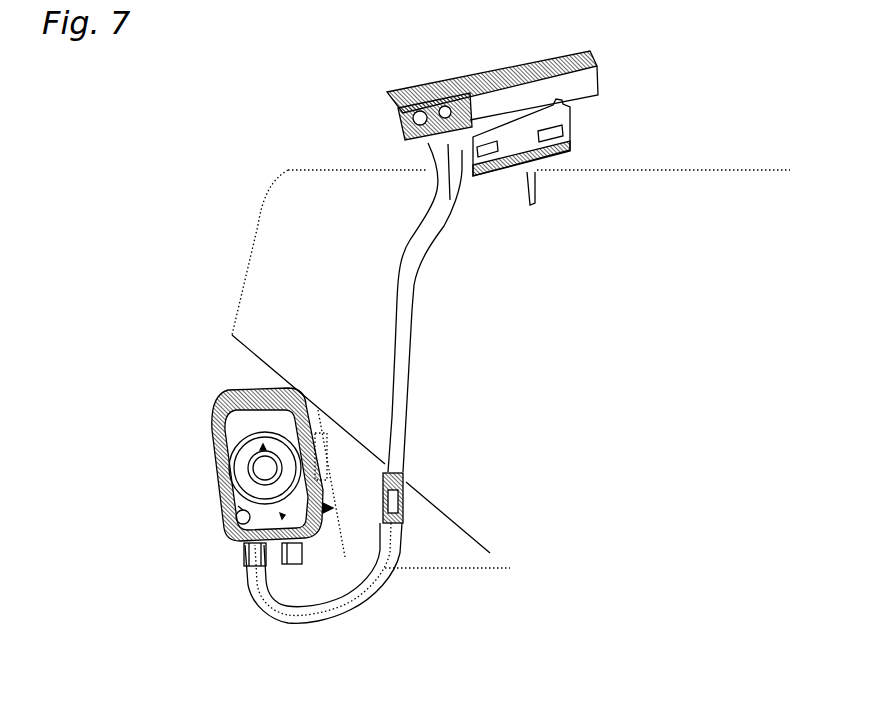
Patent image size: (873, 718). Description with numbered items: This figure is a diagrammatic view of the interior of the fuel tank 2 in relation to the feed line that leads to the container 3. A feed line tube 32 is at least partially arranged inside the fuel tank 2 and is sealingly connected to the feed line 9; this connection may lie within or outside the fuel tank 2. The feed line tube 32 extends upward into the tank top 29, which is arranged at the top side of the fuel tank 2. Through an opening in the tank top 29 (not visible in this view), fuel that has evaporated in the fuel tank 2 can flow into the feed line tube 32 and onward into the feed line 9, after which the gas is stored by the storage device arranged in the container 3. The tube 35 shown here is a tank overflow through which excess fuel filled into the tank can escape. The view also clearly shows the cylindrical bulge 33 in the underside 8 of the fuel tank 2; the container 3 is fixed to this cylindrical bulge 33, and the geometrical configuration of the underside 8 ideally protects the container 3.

The fuel tank 2 is at (292, 238).
The container 3 is at (198, 485).
The underside 8 is at (300, 515).
The feed line 9 is at (267, 610).
The tank top 29 is at (363, 97).
The feed line tube 32 is at (393, 350).
The cylindrical bulge 33 is at (428, 540).
The tube 35 is at (480, 153).